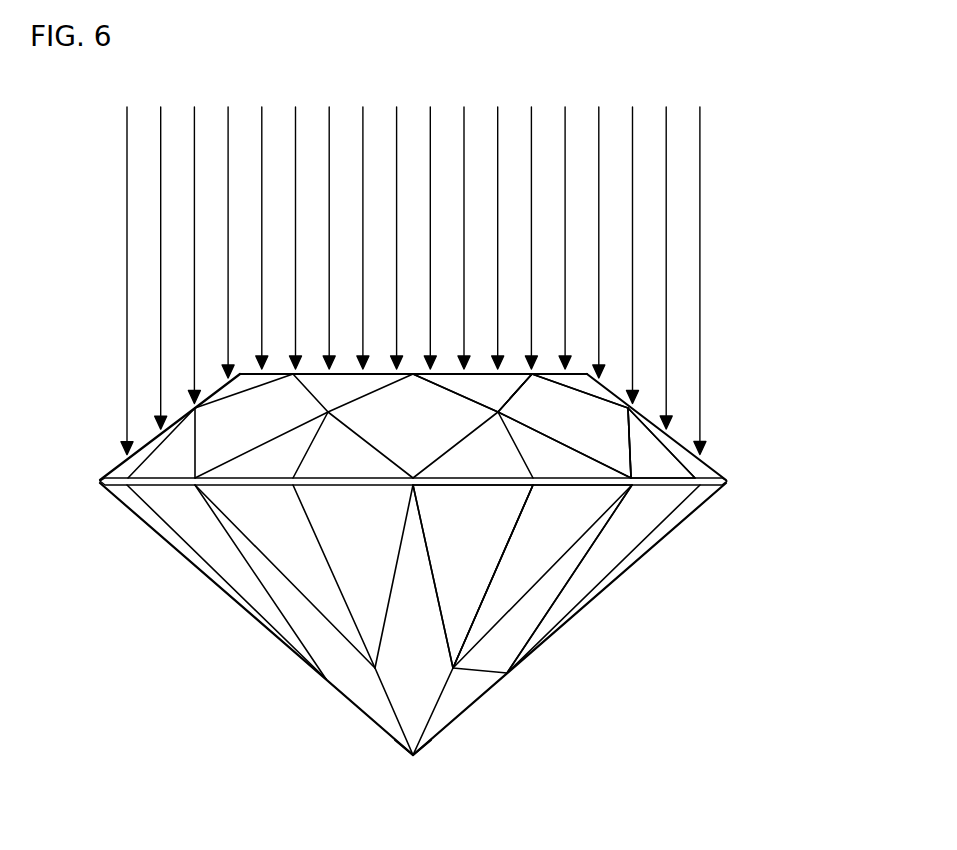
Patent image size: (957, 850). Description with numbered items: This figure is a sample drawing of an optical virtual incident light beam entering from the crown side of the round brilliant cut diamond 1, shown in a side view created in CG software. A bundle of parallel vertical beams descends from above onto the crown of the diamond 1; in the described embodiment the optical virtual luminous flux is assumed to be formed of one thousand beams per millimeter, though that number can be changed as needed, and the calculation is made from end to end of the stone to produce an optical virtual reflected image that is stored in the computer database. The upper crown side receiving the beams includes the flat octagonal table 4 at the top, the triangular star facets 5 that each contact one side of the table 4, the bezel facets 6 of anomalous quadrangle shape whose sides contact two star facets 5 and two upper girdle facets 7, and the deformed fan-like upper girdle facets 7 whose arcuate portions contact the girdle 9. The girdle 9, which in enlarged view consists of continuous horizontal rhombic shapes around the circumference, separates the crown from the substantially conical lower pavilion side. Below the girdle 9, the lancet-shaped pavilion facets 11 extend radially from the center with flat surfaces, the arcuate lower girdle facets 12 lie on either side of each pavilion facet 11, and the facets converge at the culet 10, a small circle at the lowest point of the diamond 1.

The round brilliant cut diamond 1 is at (207, 583).
The table 4 is at (320, 374).
The star facet 5 is at (502, 387).
The bezel facet 6 is at (603, 425).
The upper girdle facet 7 is at (672, 468).
The girdle 9 is at (726, 479).
The culet 10 is at (412, 756).
The pavilion facet 11 is at (472, 673).
The lower girdle facet 12 is at (587, 575).